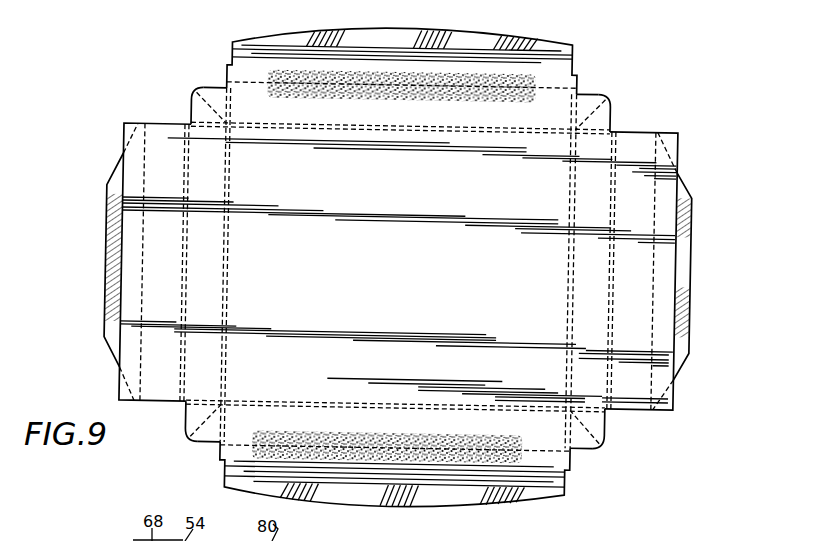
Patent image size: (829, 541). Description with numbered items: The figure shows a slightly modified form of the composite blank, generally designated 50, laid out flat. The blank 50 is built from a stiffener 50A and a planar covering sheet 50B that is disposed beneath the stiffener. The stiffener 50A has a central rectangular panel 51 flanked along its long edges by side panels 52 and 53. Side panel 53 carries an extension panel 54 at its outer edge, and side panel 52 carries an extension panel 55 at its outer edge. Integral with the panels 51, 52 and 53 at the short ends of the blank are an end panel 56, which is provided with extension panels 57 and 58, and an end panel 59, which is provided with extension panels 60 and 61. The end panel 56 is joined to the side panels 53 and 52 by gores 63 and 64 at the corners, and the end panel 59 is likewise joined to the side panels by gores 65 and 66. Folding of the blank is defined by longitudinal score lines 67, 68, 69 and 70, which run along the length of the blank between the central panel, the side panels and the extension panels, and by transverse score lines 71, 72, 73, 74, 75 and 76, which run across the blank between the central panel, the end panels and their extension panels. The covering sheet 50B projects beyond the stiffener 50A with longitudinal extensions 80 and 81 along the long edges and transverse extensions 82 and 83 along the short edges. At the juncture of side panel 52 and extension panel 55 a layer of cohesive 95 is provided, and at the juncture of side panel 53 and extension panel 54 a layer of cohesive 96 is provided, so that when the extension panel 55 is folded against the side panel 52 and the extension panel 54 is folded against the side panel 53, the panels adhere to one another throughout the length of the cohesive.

The composite blank 50 is at (612, 88).
The stiffener 50A is at (631, 301).
The covering sheet 50B is at (321, 17).
The rectangular panel 51 is at (455, 262).
The side panel 52 is at (405, 426).
The side panel 53 is at (350, 119).
The extension panel 54 is at (546, 54).
The extension panel 55 is at (476, 474).
The end panel 56 is at (202, 261).
The extension panel 57 is at (165, 276).
The extension panel 58 is at (131, 292).
The end panel 59 is at (593, 200).
The extension panel 60 is at (692, 226).
The extension panel 61 is at (664, 248).
The gore 63 is at (200, 111).
The gore 64 is at (212, 95).
The gore 65 is at (587, 92).
The gore 66 is at (600, 109).
The longitudinal score line 67 is at (415, 125).
The longitudinal score line 68 is at (551, 80).
The longitudinal score line 69 is at (405, 400).
The longitudinal score line 70 is at (263, 416).
The transverse score line 71 is at (231, 273).
The transverse score line 72 is at (188, 296).
The transverse score line 73 is at (146, 315).
The transverse score line 74 is at (571, 285).
The transverse score line 75 is at (613, 297).
The transverse score line 76 is at (656, 315).
The longitudinal extension 80 is at (453, 7).
The longitudinal extension 81 is at (419, 492).
The transverse extension 82 is at (111, 310).
The transverse extension 83 is at (688, 260).
The layer of cohesive 95 is at (336, 434).
The layer of cohesive 96 is at (378, 90).